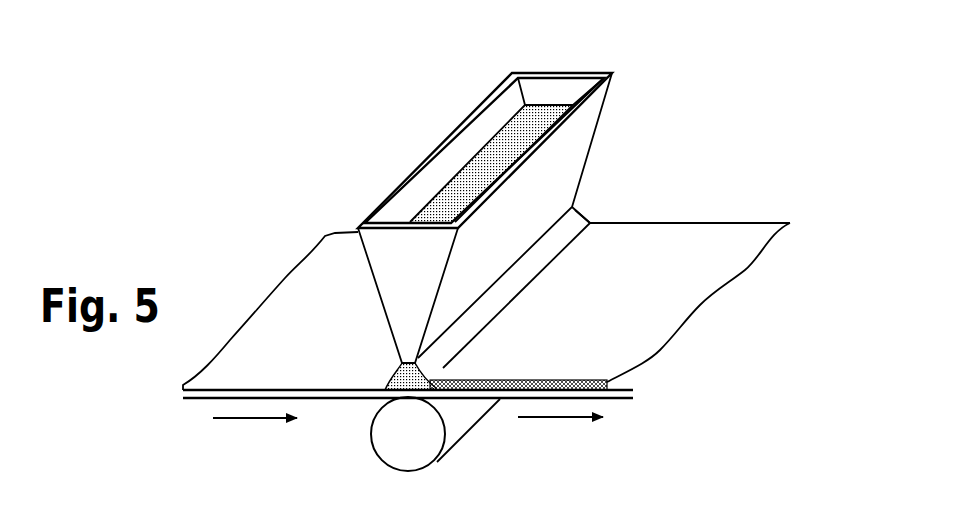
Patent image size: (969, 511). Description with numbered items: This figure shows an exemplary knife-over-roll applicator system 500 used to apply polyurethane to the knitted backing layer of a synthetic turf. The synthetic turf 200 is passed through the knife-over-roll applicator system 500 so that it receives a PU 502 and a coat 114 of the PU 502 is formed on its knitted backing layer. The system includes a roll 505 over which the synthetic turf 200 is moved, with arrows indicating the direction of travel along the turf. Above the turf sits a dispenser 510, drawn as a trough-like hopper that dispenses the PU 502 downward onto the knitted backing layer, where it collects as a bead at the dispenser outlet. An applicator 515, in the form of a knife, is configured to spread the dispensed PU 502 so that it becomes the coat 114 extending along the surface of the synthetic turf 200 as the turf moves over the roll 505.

The knife-over-roll applicator system 500 is at (728, 153).
The dispenser 510 is at (583, 138).
The applicator 515 is at (572, 218).
The PU 502 is at (393, 377).
The coat 114 is at (607, 382).
The synthetic turf 200 is at (333, 400).
The roll 505 is at (428, 460).